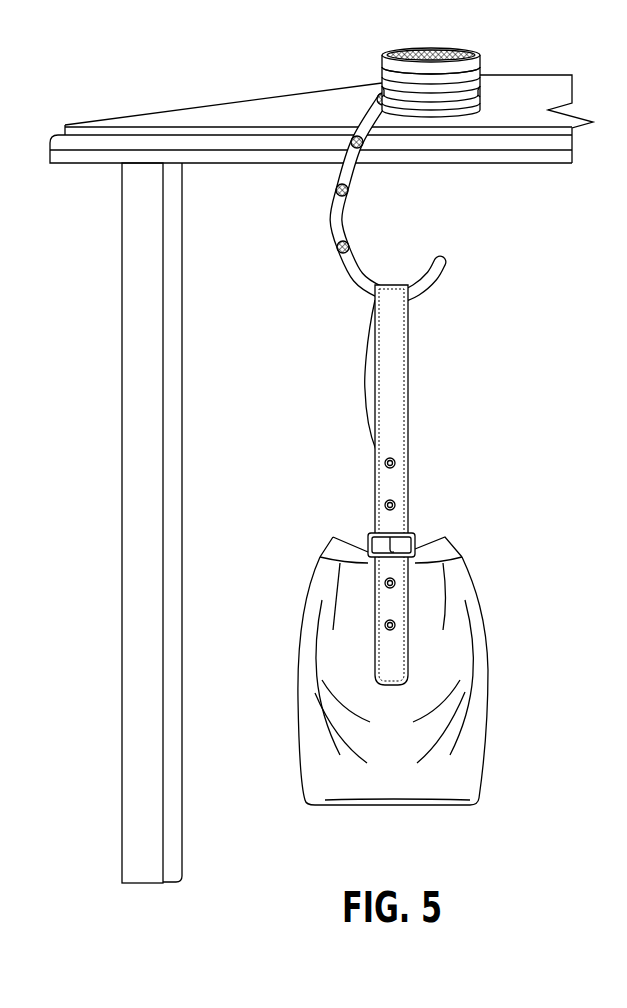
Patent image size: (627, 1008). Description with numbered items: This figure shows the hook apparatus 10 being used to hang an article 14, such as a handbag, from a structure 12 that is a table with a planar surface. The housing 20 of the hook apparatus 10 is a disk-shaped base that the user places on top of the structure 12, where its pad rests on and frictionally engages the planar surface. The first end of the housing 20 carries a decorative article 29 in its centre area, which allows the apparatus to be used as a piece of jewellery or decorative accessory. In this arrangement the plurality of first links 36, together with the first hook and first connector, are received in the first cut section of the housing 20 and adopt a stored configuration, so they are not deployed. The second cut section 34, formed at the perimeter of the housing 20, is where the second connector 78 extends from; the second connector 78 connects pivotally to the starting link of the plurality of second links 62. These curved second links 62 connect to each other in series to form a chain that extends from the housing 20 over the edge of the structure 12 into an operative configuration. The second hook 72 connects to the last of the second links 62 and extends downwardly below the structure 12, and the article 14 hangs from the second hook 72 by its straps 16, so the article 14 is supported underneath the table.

The hook apparatus 10 is at (407, 157).
The structure 12 is at (165, 117).
The article 14 is at (450, 652).
The straps 16 is at (390, 340).
The housing 20 is at (410, 118).
The decorative article 29 is at (420, 50).
The second cut section 34 is at (455, 103).
The plurality of first links 36 is at (456, 79).
The plurality of second links 62 is at (333, 165).
The second hook 72 is at (340, 265).
The second connector 78 is at (380, 96).